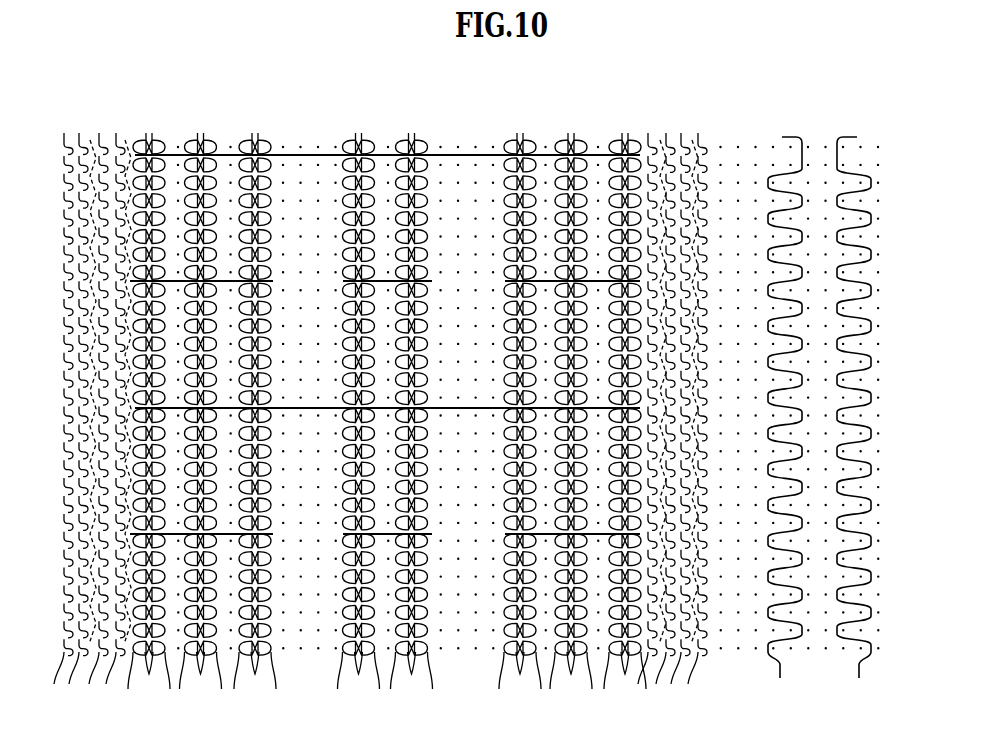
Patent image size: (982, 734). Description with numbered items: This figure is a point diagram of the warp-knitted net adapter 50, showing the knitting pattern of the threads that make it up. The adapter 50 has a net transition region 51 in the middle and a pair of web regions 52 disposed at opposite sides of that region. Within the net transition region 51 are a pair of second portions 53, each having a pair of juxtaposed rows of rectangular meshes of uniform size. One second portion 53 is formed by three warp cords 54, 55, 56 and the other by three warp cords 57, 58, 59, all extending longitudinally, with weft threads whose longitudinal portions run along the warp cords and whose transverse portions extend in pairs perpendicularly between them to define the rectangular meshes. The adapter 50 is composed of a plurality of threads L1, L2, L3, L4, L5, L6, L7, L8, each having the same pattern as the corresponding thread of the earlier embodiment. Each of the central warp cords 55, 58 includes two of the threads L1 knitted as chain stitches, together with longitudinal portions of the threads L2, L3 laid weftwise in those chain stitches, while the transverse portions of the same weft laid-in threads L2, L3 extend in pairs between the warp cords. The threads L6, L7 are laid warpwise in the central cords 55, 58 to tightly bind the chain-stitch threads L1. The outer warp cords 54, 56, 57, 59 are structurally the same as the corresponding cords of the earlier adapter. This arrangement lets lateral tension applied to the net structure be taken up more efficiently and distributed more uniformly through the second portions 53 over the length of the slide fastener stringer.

The adapter 50 is at (54, 306).
The net transition region 51 is at (637, 66).
The web region 52 is at (123, 66).
The second portion 53 is at (270, 98).
The warp cord 54 is at (133, 130).
The central warp cord 55 is at (222, 130).
The warp cord 56 is at (237, 130).
The warp cord 57 is at (537, 130).
The central warp cord 58 is at (592, 130).
The warp cord 59 is at (643, 130).
The thread L1 is at (376, 420).
The thread L2 is at (351, 684).
The thread L3 is at (430, 684).
The thread L4 is at (335, 684).
The thread L5 is at (443, 684).
The thread L6 is at (785, 414).
The thread L7 is at (854, 414).
The thread L8 is at (690, 702).